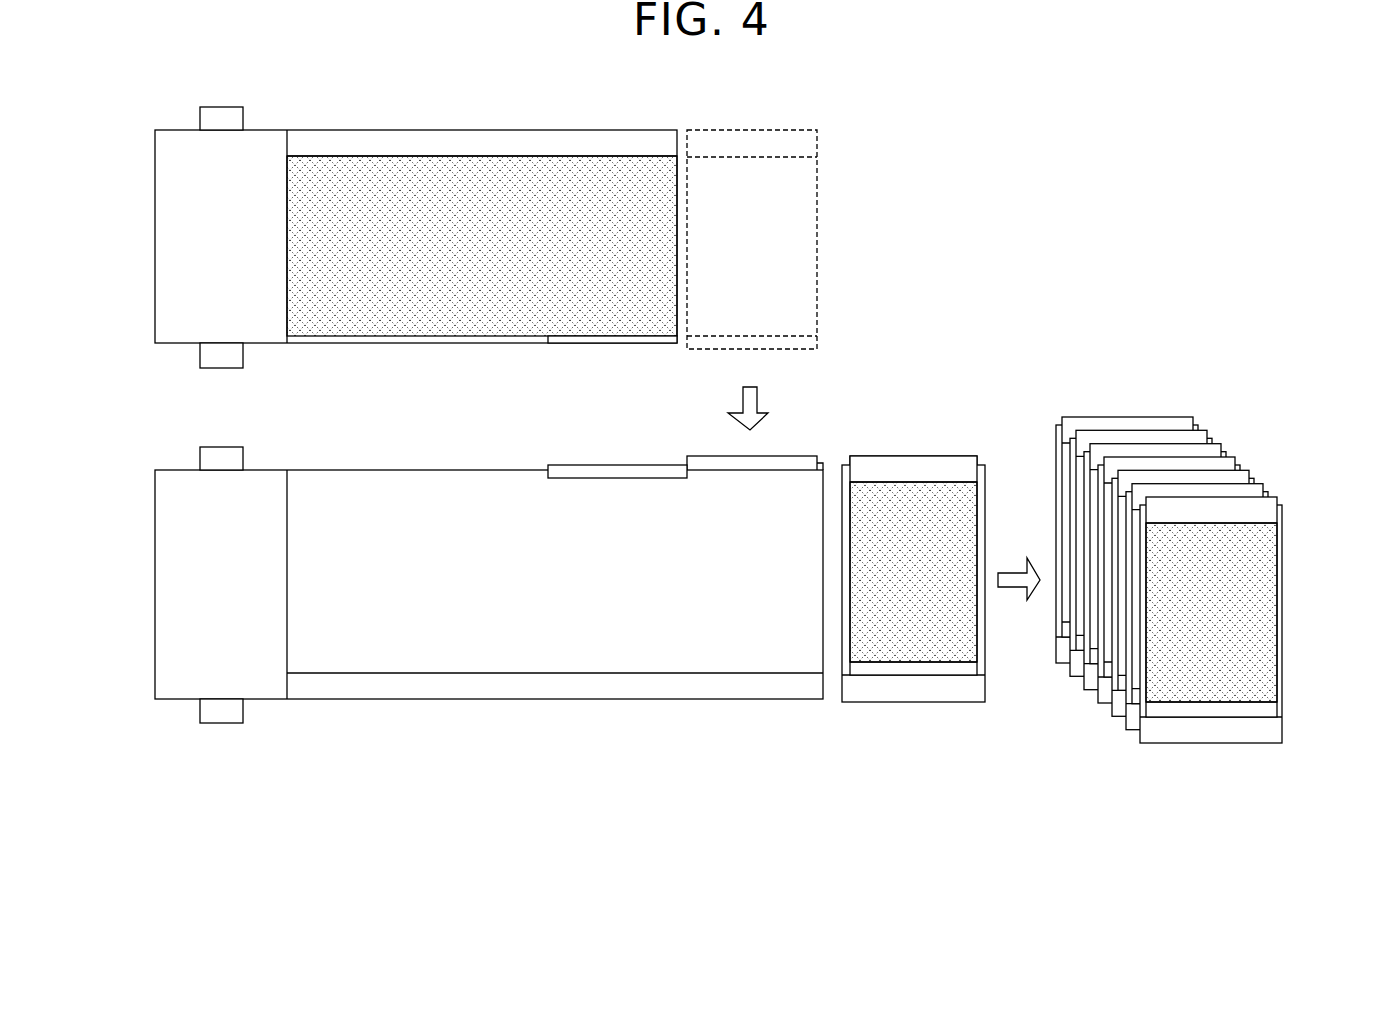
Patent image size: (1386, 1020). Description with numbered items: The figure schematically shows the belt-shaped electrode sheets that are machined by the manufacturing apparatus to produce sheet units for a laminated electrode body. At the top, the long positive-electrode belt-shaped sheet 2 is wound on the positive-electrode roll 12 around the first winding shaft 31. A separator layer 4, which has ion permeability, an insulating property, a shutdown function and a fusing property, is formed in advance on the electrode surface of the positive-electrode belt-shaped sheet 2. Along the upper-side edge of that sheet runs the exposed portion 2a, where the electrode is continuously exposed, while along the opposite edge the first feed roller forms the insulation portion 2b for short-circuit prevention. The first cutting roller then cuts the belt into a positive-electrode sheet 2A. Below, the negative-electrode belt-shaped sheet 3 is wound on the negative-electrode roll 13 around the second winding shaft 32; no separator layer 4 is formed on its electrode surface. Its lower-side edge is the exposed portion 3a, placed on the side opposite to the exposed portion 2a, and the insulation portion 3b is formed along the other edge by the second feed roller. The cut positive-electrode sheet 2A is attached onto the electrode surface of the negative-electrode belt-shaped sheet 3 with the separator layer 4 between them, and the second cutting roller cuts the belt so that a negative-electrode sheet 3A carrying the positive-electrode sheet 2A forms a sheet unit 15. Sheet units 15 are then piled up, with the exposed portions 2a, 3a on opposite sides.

The positive-electrode roll 12 is at (264, 131).
The negative-electrode roll 13 is at (270, 700).
The positive-electrode belt-shaped sheet 2 is at (343, 130).
The exposed portion 2a is at (527, 143).
The insulation portion 2b is at (582, 345).
The positive-electrode sheet 2A is at (817, 208).
The negative-electrode belt-shaped sheet 3 is at (398, 700).
The exposed portion 3a is at (483, 686).
The insulation portion 3b is at (615, 462).
The negative-electrode sheet 3A is at (990, 662).
The separator layer 4 is at (408, 170).
The sheet unit 15 is at (930, 712).
The first winding shaft 31 is at (218, 113).
The second winding shaft 32 is at (218, 722).